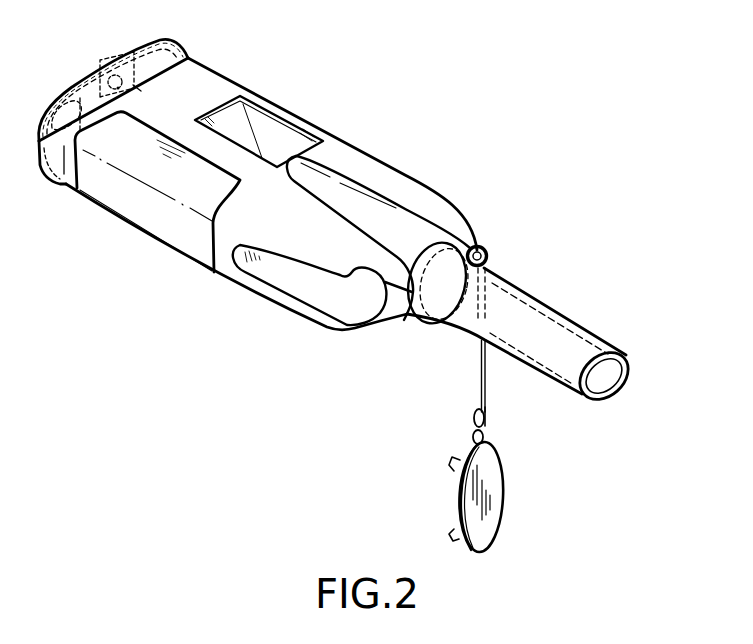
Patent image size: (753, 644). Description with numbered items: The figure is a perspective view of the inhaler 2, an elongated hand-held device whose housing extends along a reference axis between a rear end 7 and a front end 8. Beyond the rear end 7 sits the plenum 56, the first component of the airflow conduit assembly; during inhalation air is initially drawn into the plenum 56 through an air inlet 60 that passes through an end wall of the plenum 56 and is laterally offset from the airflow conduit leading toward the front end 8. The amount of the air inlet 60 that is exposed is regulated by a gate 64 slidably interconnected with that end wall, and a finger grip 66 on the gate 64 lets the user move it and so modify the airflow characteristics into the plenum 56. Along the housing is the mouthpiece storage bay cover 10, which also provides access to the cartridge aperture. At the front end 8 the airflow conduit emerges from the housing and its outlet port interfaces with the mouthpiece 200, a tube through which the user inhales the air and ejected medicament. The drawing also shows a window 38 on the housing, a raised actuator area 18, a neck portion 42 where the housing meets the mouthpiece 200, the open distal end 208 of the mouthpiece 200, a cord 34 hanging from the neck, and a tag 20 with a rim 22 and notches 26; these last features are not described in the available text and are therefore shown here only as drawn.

The inhaler 2 is at (416, 185).
The plenum 56 is at (180, 45).
The air inlet 60 is at (64, 107).
The gate 64 is at (99, 97).
The finger grip 66 is at (109, 87).
The rear end 7 is at (140, 90).
The display window 38 is at (275, 120).
The mouthpiece storage bay cover 10 is at (137, 208).
The front end 8 is at (376, 330).
The button 18 is at (310, 297).
The neck collar 42 is at (405, 318).
The mouthpiece 200 is at (560, 317).
The tube opening 208 is at (637, 360).
The cord 34 is at (487, 390).
The tag 20 is at (502, 505).
The tag rim 22 is at (446, 500).
The notches 26 is at (446, 458).